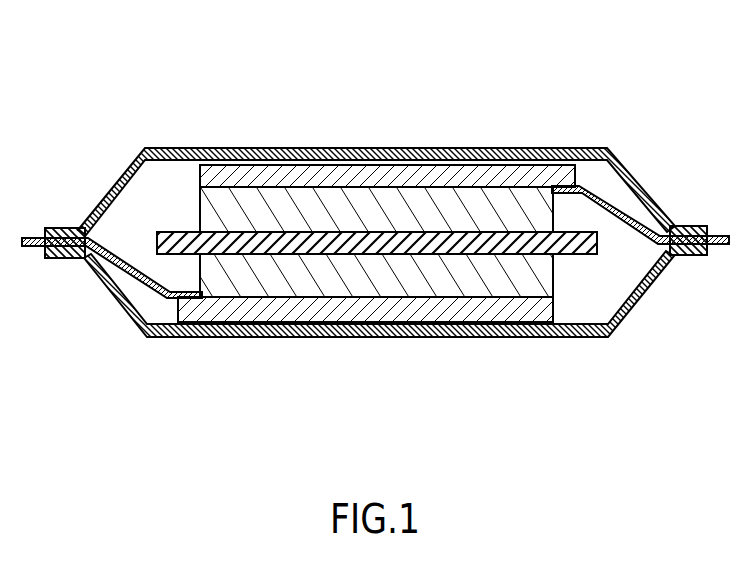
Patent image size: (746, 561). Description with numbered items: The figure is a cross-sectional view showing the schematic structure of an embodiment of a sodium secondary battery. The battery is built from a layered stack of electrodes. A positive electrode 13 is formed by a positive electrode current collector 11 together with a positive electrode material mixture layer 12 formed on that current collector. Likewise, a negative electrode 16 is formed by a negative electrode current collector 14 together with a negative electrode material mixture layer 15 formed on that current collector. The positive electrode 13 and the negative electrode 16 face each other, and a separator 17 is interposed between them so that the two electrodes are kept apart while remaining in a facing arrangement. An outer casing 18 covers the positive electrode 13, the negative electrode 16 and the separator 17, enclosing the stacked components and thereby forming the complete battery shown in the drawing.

The positive electrode current collector 11 is at (393, 310).
The positive electrode material mixture layer 12 is at (311, 280).
The positive electrode 13 is at (365, 360).
The negative electrode current collector 14 is at (310, 176).
The negative electrode material mixture layer 15 is at (397, 207).
The negative electrode 16 is at (387, 125).
The separator 17 is at (177, 232).
The outer casing 18 is at (590, 337).